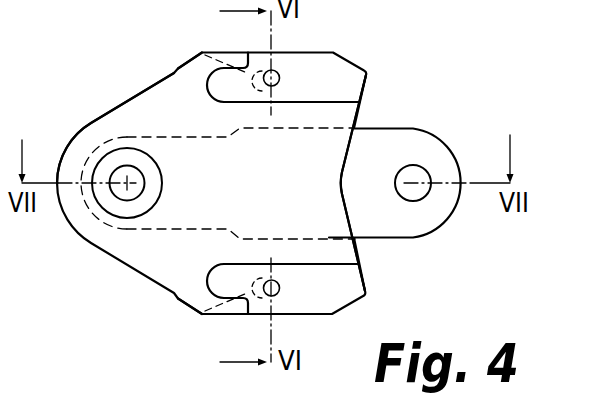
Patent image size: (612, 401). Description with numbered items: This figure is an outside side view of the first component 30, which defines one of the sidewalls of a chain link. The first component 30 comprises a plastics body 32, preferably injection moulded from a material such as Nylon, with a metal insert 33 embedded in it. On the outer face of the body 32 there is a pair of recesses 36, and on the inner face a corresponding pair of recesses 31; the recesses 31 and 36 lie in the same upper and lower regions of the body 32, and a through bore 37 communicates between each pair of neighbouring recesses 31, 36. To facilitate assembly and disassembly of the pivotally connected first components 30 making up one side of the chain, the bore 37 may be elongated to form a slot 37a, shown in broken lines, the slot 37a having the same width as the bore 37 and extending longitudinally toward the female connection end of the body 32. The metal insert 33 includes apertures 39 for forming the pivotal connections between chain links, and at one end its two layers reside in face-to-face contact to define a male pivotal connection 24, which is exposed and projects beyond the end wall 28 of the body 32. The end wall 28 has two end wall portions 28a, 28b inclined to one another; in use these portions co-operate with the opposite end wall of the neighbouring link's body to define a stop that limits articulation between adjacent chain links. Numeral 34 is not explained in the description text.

The male pivotal connection 24 is at (448, 155).
The end wall 28 is at (374, 114).
The end wall portion 28a is at (361, 110).
The end wall portion 28b is at (360, 250).
The first component 30 is at (360, 60).
The recesses 31 is at (327, 393).
The plastics body 32 is at (153, 107).
The metal insert 33 is at (176, 235).
The bore 34 is at (118, 197).
The recesses 36 is at (312, 63).
The through bore 37 is at (281, 81).
The slot 37a is at (202, 52).
The apertures 39 is at (417, 197).